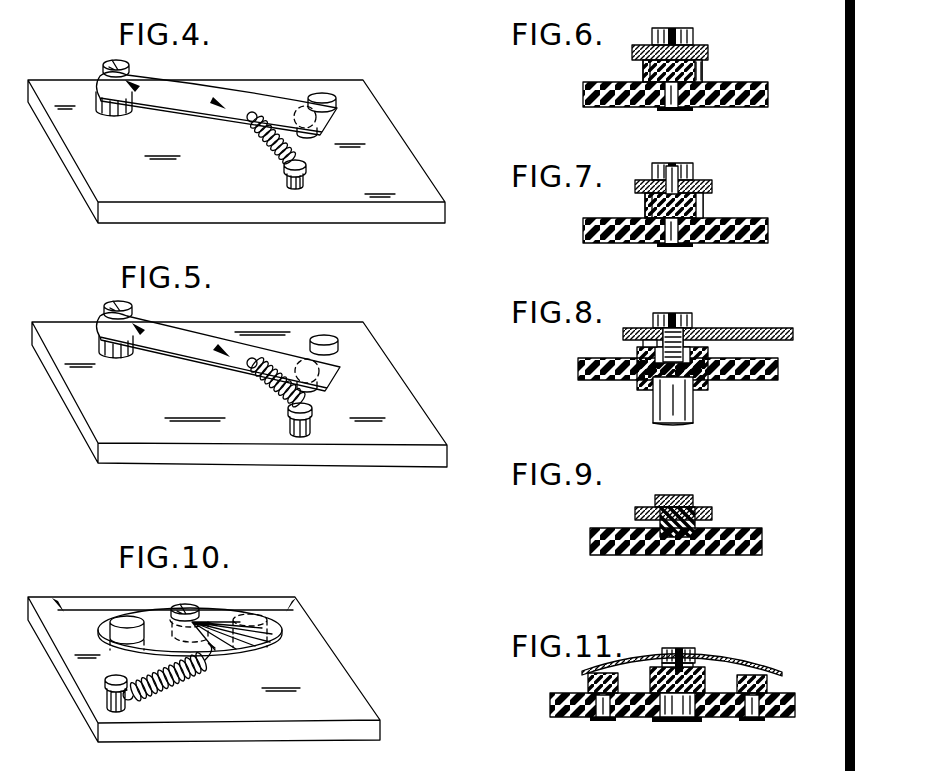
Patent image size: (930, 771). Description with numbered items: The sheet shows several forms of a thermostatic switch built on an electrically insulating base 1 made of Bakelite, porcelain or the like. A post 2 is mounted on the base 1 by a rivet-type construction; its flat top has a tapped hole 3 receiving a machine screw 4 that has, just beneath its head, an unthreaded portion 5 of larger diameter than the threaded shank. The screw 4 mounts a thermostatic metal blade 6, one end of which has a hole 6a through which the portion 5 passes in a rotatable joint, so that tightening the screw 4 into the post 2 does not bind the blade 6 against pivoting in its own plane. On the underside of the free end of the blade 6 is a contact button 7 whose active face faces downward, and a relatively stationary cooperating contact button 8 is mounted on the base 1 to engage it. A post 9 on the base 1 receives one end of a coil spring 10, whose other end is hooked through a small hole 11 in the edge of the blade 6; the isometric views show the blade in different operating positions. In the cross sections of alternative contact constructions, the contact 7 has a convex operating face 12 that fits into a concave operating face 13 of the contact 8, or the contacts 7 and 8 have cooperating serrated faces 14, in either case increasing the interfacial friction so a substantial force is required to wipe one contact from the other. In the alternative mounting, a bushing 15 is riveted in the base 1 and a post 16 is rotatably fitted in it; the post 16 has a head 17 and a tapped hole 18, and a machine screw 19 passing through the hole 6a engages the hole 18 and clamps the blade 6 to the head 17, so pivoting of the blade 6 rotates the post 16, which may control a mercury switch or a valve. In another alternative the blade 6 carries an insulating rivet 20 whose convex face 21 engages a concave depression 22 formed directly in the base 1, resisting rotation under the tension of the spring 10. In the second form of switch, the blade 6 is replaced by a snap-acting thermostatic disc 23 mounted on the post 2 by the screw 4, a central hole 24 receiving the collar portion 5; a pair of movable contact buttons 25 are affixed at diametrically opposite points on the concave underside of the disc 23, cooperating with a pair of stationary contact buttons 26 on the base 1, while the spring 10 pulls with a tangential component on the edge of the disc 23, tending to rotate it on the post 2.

In FIG. 4, the base 1 is at (393, 157).
In FIG. 5, the base 1 is at (395, 390).
In FIG. 10, the base 1 is at (320, 660).
In FIG. 6, the base 1 is at (757, 85).
In FIG. 7, the base 1 is at (757, 222).
In FIG. 8, the base 1 is at (773, 380).
In FIG. 9, the base 1 is at (592, 530).
In FIG. 11, the base 1 is at (550, 701).
In FIG. 4, the post 2 is at (114, 112).
In FIG. 5, the post 2 is at (118, 356).
In FIG. 10, the post 2 is at (165, 615).
In FIG. 6, the post 2 is at (640, 68).
In FIG. 7, the post 2 is at (645, 203).
In FIG. 11, the post 2 is at (680, 722).
In FIG. 11, the tapped hole 3 is at (700, 667).
In FIG. 4, the machine screw 4 is at (105, 62).
In FIG. 5, the machine screw 4 is at (108, 304).
In FIG. 10, the machine screw 4 is at (192, 604).
In FIG. 6, the machine screw 4 is at (662, 28).
In FIG. 7, the machine screw 4 is at (660, 163).
In FIG. 11, the machine screw 4 is at (695, 650).
In FIG. 11, the unthreaded portion 5 is at (680, 648).
In FIG. 4, the thermostatic metal blade 6 is at (200, 97).
In FIG. 5, the thermostatic metal blade 6 is at (175, 338).
In FIG. 6, the thermostatic metal blade 6 is at (645, 45).
In FIG. 7, the thermostatic metal blade 6 is at (712, 186).
In FIG. 8, the thermostatic metal blade 6 is at (735, 328).
In FIG. 9, the thermostatic metal blade 6 is at (712, 508).
In FIG. 8, the hole 6a is at (650, 328).
In FIG. 4, the contact button 7 is at (308, 130).
In FIG. 5, the contact button 7 is at (325, 375).
In FIG. 6, the contact button 7 is at (676, 30).
In FIG. 7, the contact button 7 is at (693, 178).
In FIG. 4, the cooperating contact button 8 is at (325, 93).
In FIG. 5, the cooperating contact button 8 is at (330, 336).
In FIG. 6, the cooperating contact button 8 is at (702, 76).
In FIG. 7, the cooperating contact button 8 is at (703, 210).
In FIG. 4, the post 9 is at (308, 182).
In FIG. 5, the post 9 is at (305, 437).
In FIG. 10, the post 9 is at (105, 700).
In FIG. 4, the coil spring 10 is at (275, 158).
In FIG. 5, the coil spring 10 is at (278, 405).
In FIG. 10, the coil spring 10 is at (178, 680).
In FIG. 4, the hole 11 is at (250, 112).
In FIG. 5, the hole 11 is at (252, 358).
In FIG. 10, the hole 11 is at (292, 614).
In FIG. 6, the convex operating face 12 is at (700, 66).
In FIG. 6, the concave operating face 13 is at (700, 109).
In FIG. 7, the serrated faces 14 is at (700, 247).
In FIG. 8, the bushing 15 is at (640, 385).
In FIG. 8, the post 16 is at (685, 403).
In FIG. 8, the head 17 is at (643, 343).
In FIG. 8, the tapped hole 18 is at (700, 328).
In FIG. 8, the machine screw 19 is at (663, 313).
In FIG. 9, the rivet 20 is at (688, 497).
In FIG. 9, the convex face 21 is at (672, 495).
In FIG. 9, the concave depression 22 is at (683, 555).
In FIG. 10, the snap-acting thermostatic disc 23 is at (218, 602).
In FIG. 11, the snap-acting thermostatic disc 23 is at (738, 662).
In FIG. 11, the central hole 24 is at (662, 664).
In FIG. 10, the movable contact buttons 25 is at (257, 615).
In FIG. 11, the movable contact buttons 25 is at (762, 676).
In FIG. 10, the stationary contact buttons 26 is at (258, 648).
In FIG. 11, the stationary contact buttons 26 is at (752, 721).